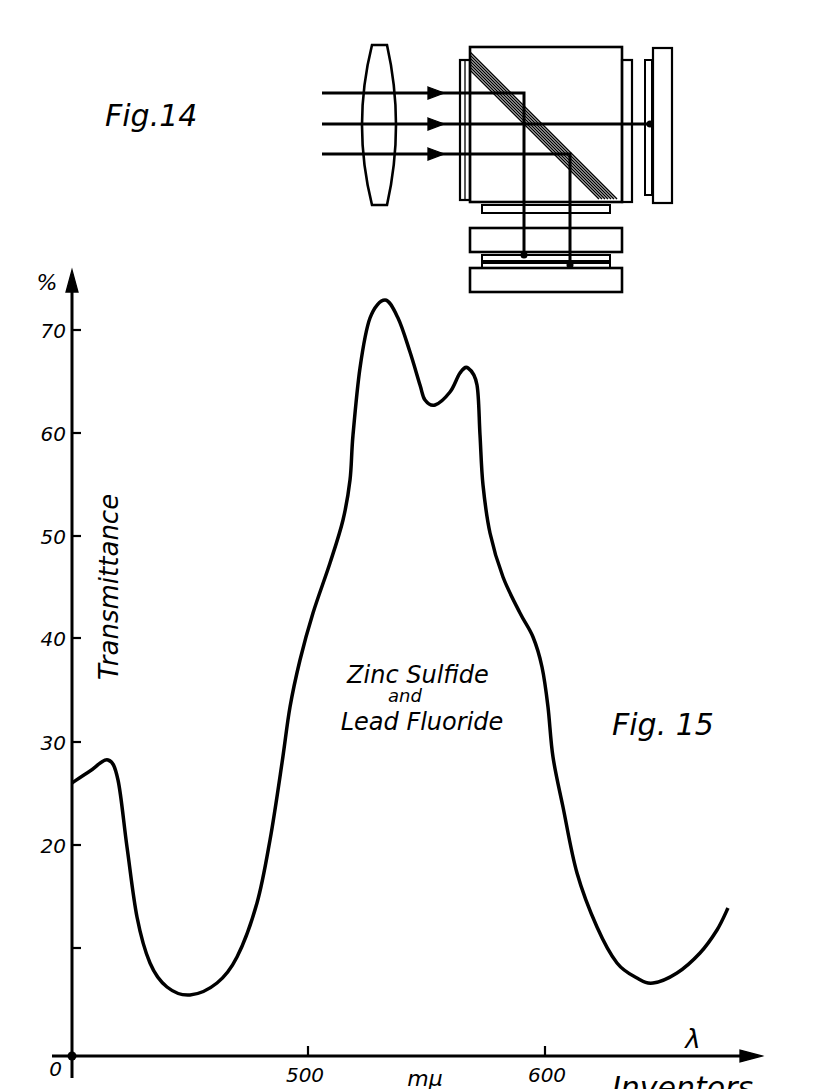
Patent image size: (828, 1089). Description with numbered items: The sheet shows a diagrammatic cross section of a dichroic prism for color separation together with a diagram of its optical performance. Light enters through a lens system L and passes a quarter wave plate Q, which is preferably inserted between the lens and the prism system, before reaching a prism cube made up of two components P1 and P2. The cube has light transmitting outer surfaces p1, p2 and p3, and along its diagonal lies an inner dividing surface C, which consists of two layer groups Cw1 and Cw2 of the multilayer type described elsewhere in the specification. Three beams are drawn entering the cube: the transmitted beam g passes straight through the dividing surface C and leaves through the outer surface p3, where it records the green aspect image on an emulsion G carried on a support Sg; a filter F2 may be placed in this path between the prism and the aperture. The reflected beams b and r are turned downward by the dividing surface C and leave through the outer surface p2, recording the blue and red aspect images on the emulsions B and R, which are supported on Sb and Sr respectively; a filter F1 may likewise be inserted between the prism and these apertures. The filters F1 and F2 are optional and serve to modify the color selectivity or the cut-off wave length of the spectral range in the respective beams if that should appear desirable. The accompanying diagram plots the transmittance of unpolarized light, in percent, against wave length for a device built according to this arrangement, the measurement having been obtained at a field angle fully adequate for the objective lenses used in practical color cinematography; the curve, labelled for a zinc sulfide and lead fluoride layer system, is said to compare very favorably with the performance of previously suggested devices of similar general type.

The lens system L is at (378, 56).
The reflected blue beam b is at (522, 118).
The transmitted green beam g is at (280, 158).
The reflected red beam r is at (566, 172).
The quarter wave plate Q is at (466, 70).
The light transmitting outer surface p1 is at (470, 180).
The prism cube component P2 is at (546, 124).
The prism cube component P1 is at (492, 186).
The inner dividing surface C is at (497, 64).
The layer group Cw1 is at (536, 118).
The layer group Cw2 is at (592, 170).
The light transmitting outer surface p3 is at (626, 60).
The support Sg is at (649, 60).
The filter F2 is at (628, 86).
The emulsion G is at (648, 192).
The filter F1 is at (612, 208).
The light transmitting outer surface p2 is at (480, 238).
The support Sb is at (482, 258).
The emulsion B is at (612, 265).
The support Sr is at (543, 284).
The emulsion R is at (598, 270).